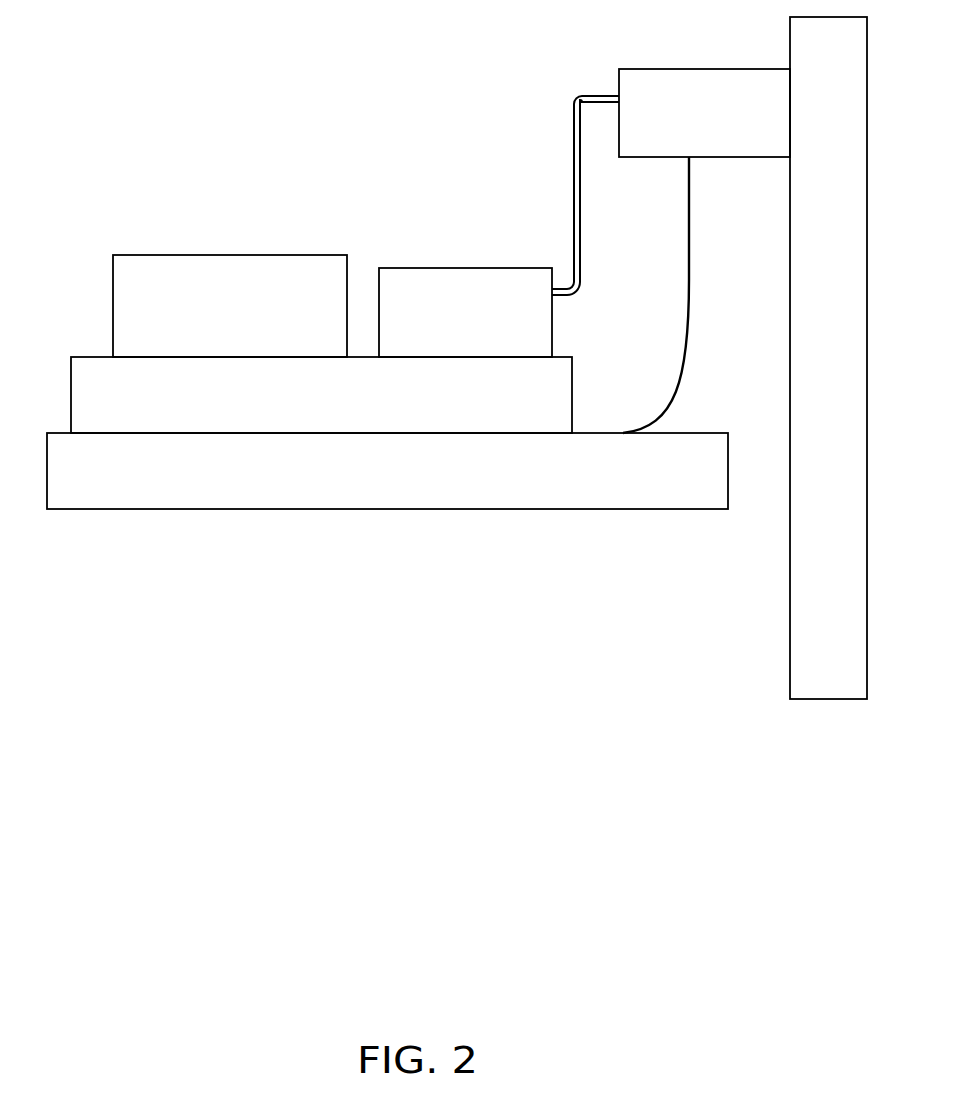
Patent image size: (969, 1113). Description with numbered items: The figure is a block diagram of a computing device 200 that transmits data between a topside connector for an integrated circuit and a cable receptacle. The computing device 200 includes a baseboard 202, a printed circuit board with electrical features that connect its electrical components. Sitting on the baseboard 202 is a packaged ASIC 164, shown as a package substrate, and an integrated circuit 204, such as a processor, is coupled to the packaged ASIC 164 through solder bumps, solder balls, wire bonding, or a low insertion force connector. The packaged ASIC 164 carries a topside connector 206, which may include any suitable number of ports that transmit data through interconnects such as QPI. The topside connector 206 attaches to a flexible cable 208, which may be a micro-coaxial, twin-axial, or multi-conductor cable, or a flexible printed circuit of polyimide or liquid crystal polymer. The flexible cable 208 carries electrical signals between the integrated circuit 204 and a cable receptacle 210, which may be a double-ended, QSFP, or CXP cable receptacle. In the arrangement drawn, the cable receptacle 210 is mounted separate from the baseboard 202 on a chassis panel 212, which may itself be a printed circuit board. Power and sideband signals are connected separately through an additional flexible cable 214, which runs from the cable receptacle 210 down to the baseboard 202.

The computing device 200 is at (388, 1027).
The baseboard 202 is at (212, 509).
The packaged ASIC 164 is at (572, 380).
The integrated circuit 204 is at (213, 255).
The topside connector 206 is at (448, 268).
The flexible cable 208 is at (572, 95).
The cable receptacle 210 is at (725, 69).
The chassis panel 212 is at (790, 630).
The additional flexible cable 214 is at (681, 368).